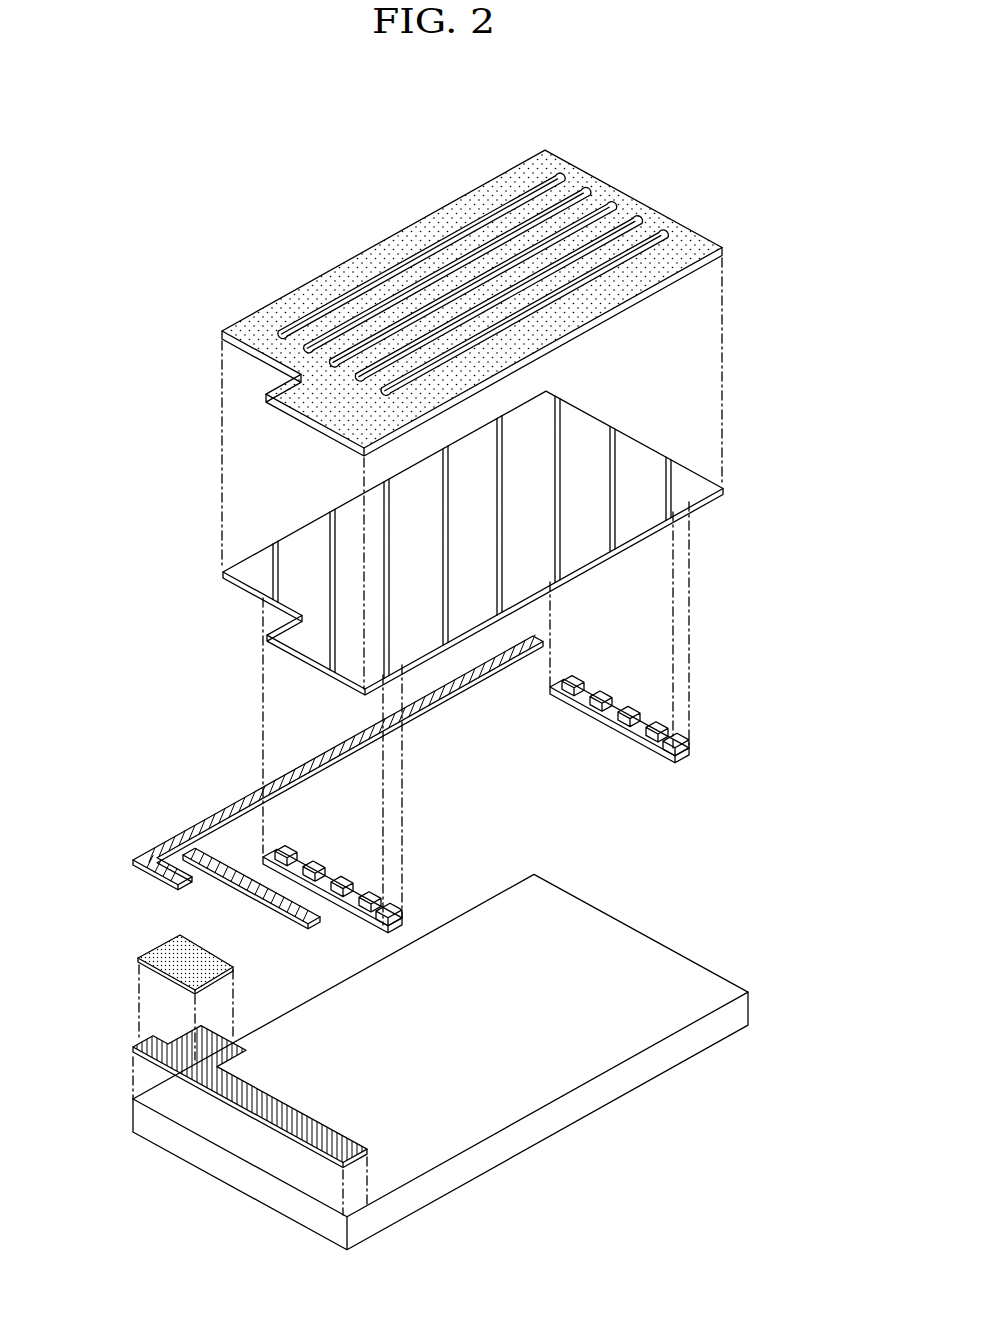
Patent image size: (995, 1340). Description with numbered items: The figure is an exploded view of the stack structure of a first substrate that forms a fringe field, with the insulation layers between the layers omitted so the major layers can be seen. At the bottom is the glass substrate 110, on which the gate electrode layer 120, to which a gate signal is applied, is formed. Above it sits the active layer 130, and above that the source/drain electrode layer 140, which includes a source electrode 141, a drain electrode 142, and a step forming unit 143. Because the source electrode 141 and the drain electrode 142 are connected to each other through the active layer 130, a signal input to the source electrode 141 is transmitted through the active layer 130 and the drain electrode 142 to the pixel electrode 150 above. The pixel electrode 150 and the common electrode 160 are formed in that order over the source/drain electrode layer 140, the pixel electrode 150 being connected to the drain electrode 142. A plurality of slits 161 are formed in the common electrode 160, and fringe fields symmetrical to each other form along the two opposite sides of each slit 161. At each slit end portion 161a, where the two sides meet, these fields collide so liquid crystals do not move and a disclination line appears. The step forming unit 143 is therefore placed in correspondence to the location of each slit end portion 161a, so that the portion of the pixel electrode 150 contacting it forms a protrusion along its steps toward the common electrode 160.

The glass substrate 110 is at (167, 1158).
The gate electrode layer 120 is at (133, 1046).
The active layer 130 is at (140, 942).
The source/drain electrode layer 140 is at (359, 800).
The source electrode 141 is at (172, 840).
The drain electrode 142 is at (262, 908).
The step forming unit 143 is at (302, 855).
The pixel electrode 150 is at (243, 590).
The common electrode 160 is at (384, 279).
The slit 161 is at (669, 233).
The slit end portion 161a is at (383, 390).